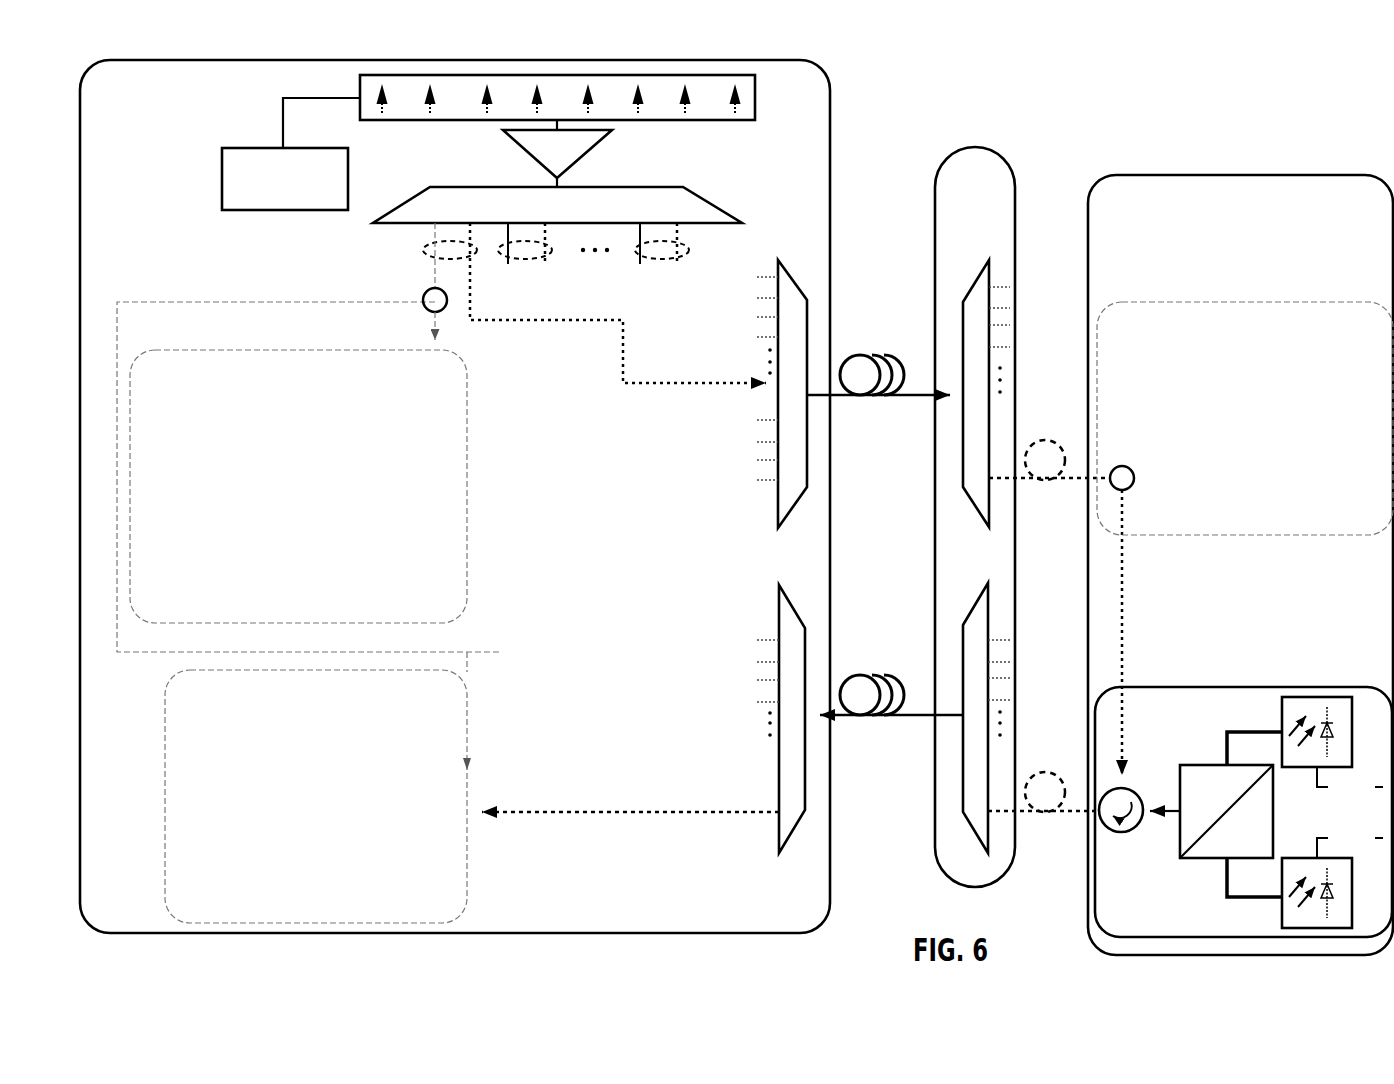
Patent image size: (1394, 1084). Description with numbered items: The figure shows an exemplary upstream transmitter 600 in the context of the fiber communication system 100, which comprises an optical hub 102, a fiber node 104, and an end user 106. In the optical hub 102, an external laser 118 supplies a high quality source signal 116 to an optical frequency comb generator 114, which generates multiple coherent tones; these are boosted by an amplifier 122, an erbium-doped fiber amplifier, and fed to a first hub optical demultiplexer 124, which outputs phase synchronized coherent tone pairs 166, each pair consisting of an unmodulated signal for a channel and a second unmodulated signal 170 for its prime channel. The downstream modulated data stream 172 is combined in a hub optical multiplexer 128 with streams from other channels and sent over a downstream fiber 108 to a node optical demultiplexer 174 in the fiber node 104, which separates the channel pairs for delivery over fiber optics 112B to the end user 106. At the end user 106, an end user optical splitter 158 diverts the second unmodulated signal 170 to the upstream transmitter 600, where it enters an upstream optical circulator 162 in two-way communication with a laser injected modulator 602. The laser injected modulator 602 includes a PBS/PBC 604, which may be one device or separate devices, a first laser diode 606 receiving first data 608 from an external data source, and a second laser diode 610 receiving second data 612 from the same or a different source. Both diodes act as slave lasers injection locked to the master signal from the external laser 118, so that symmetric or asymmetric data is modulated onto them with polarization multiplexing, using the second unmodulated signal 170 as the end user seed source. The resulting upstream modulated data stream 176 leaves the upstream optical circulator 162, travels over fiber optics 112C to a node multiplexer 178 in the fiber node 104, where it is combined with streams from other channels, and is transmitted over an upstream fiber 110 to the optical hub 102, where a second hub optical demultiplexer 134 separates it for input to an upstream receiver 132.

The fiber communication system 100 is at (1322, 106).
The optical hub 102 is at (131, 95).
The fiber node 104 is at (990, 184).
The end user 106 is at (1260, 207).
The downstream fiber 108 is at (875, 350).
The upstream fiber 110 is at (876, 672).
The fiber optics 112B is at (1047, 432).
The fiber optics 112C is at (1047, 765).
The optical frequency comb generator 114 is at (667, 121).
The high quality source signal 116 is at (283, 117).
The external laser 118 is at (298, 190).
The amplifier 122 is at (570, 160).
The first hub optical demultiplexer 124 is at (718, 208).
The hub optical multiplexer 128 is at (778, 520).
The upstream receiver 132 is at (330, 914).
The second hub optical demultiplexer 134 is at (779, 608).
The end user optical splitter 158 is at (1142, 497).
The upstream optical circulator 162 is at (1122, 834).
The phase synchronized coherent tone pairs 166 is at (412, 256).
The second unmodulated signal 170 is at (1124, 606).
The downstream modulated data stream 172 is at (555, 325).
The node optical demultiplexer 174 is at (963, 300).
The upstream modulated data stream 176 is at (1075, 815).
The node multiplexer 178 is at (961, 620).
The upstream transmitter 600 is at (1141, 931).
The laser injected modulator 602 is at (1203, 757).
The PBS/PBC 604 is at (1225, 800).
The first laser diode 606 is at (1282, 715).
The first data 608 is at (1314, 782).
The second laser diode 610 is at (1282, 915).
The second data 612 is at (1311, 836).